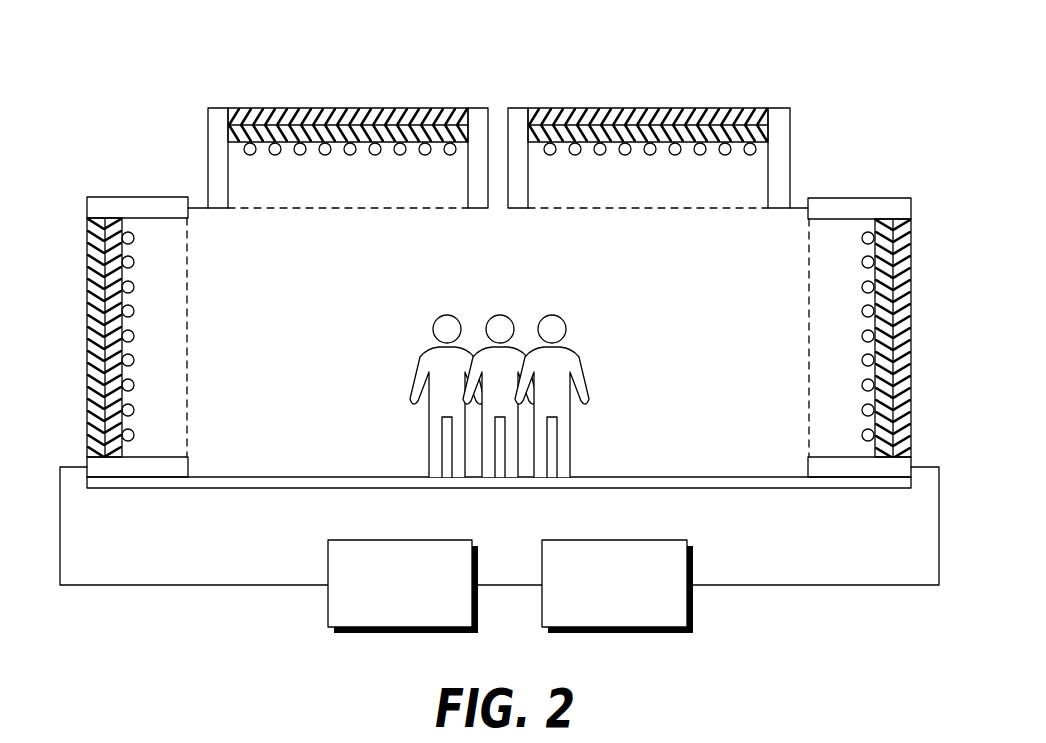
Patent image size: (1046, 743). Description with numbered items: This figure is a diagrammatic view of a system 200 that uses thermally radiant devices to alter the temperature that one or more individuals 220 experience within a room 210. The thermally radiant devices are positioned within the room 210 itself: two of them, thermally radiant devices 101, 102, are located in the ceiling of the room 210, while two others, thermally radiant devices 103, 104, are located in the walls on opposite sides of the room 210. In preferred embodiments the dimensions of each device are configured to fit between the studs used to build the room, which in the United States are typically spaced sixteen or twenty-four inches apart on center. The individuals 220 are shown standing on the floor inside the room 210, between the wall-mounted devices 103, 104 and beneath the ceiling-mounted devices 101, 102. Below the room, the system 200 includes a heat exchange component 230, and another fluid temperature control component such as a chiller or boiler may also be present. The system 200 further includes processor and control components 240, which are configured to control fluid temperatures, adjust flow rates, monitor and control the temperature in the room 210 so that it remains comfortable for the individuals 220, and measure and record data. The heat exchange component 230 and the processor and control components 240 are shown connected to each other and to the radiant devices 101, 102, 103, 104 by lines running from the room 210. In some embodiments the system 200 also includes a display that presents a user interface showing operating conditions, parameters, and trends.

The system 200 is at (332, 47).
The thermally radiant device 101 is at (208, 160).
The thermally radiant device 102 is at (790, 157).
The thermally radiant device 103 is at (138, 197).
The thermally radiant device 104 is at (862, 198).
The room 210 is at (498, 248).
The individuals 220 is at (570, 366).
The heat exchange component 230 is at (403, 586).
The processor and control components 240 is at (617, 586).